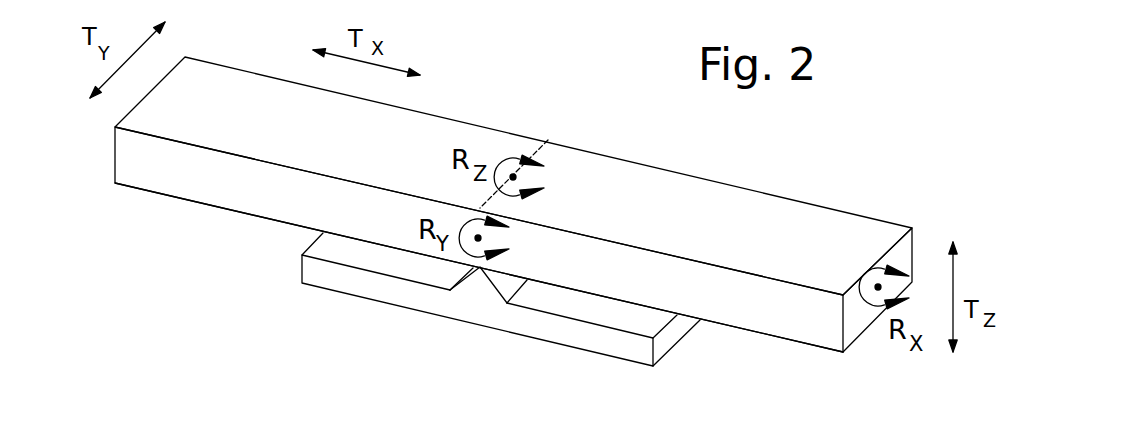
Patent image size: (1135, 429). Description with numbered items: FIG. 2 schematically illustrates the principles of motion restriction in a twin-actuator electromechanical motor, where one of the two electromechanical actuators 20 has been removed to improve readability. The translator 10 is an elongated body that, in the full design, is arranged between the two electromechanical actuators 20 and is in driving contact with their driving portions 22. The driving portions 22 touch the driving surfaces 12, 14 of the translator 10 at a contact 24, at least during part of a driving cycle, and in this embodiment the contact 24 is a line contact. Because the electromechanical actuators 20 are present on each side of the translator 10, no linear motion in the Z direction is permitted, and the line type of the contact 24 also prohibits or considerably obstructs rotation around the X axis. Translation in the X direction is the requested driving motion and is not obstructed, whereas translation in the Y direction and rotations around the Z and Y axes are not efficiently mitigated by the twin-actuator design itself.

The translator 10 is at (155, 168).
The driving surface 12 is at (790, 215).
The driving surface 14 is at (780, 338).
The electromechanical actuator 20 is at (340, 278).
The driving portion 22 is at (477, 278).
The contact 24 is at (543, 143).